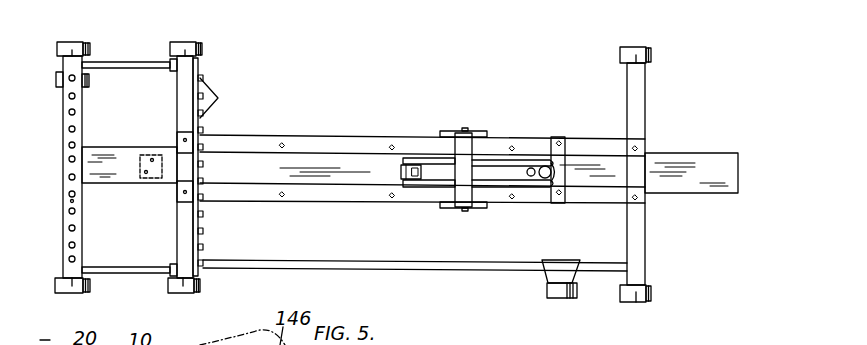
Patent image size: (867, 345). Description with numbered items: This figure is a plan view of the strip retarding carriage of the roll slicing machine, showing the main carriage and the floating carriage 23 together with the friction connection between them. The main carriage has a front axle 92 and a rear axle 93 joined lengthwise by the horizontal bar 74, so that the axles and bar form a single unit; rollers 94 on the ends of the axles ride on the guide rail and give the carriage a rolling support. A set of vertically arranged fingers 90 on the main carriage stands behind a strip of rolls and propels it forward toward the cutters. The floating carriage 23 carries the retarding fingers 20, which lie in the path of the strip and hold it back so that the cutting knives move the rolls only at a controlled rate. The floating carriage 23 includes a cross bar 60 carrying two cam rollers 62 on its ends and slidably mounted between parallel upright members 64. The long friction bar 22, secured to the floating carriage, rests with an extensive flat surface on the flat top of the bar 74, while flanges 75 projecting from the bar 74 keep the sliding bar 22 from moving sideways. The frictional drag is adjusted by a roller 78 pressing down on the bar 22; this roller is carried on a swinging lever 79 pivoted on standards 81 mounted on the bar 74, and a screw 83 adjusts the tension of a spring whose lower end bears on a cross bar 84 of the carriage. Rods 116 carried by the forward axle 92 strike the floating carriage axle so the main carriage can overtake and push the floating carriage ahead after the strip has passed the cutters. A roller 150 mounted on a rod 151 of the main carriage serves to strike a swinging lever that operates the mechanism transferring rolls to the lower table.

The retarding fingers 20 is at (70, 146).
The friction bar 22 is at (146, 147).
The floating carriage 23 is at (70, 202).
The cross bar 60 is at (69, 113).
The cam rollers 62 is at (63, 42).
The upright members 64 is at (56, 80).
The horizontal bar 74 is at (340, 200).
The flanges 75 is at (500, 204).
The roller 78 is at (403, 165).
The swinging lever 79 is at (436, 165).
The standards 81 is at (478, 131).
The screw 83 is at (532, 167).
The cross bar 84 is at (563, 152).
The fingers 90 is at (223, 98).
The front axle 92 is at (185, 236).
The rear axle 93 is at (633, 249).
The rollers 94 is at (197, 43).
The rods 116 is at (147, 62).
The roller 150 is at (553, 298).
The rod 151 is at (468, 271).